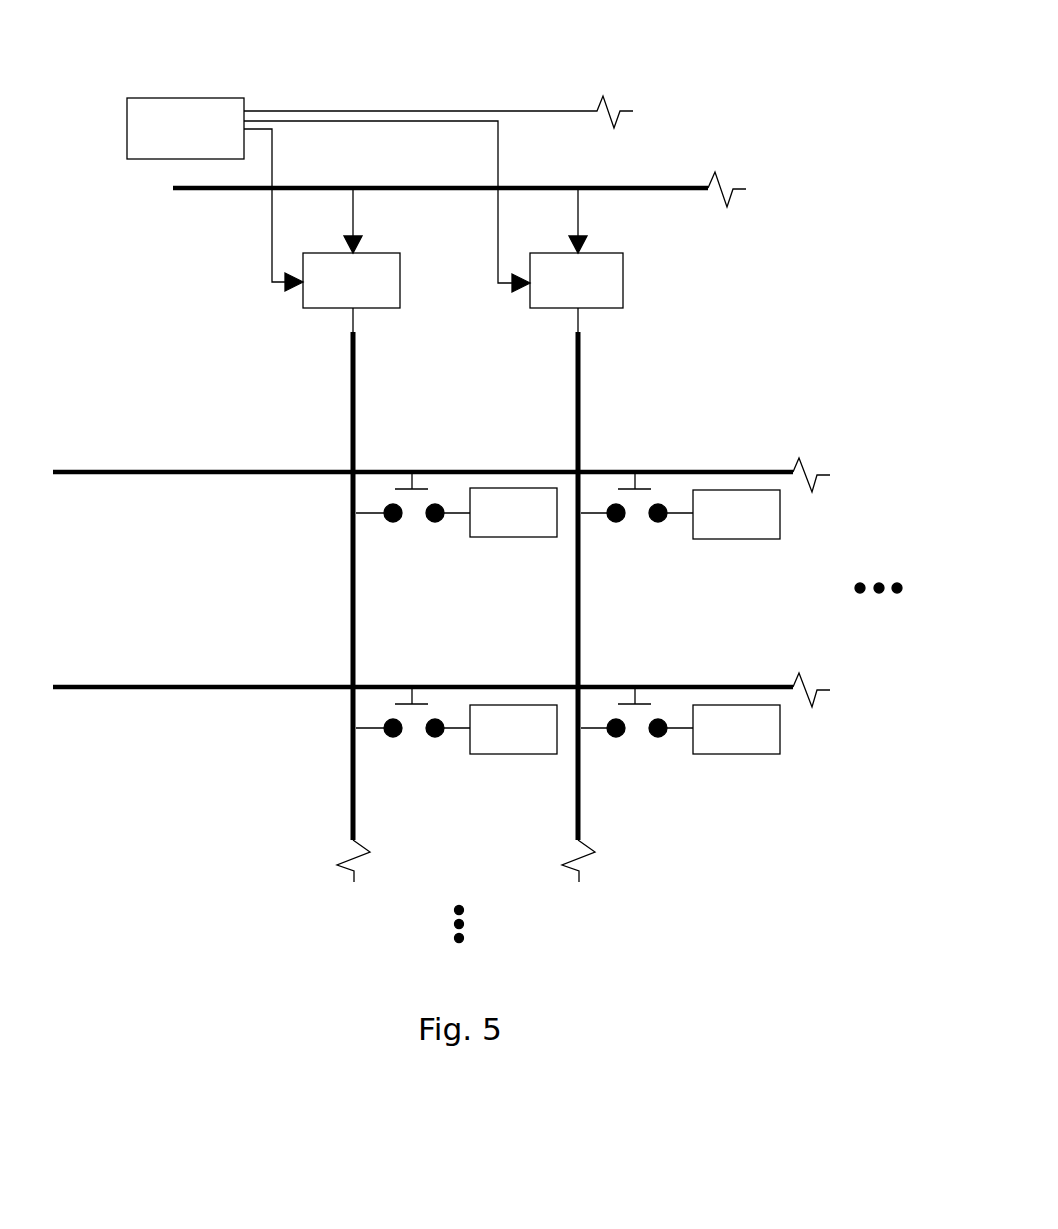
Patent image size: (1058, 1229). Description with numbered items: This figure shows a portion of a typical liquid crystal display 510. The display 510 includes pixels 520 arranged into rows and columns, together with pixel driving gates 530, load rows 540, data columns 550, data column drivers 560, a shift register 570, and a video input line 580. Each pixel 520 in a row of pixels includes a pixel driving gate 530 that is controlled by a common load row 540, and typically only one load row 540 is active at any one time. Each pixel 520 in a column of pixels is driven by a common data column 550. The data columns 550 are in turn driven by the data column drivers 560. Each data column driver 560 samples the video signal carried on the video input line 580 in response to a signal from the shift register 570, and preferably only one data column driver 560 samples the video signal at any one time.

The liquid crystal display 510 is at (700, 32).
The pixel 520 is at (497, 537).
The pixel driving gate 530 is at (430, 474).
The load row 540 is at (228, 469).
The data column 550 is at (356, 396).
The data column driver 560 is at (400, 268).
The shift register 570 is at (127, 120).
The video input line 580 is at (175, 188).